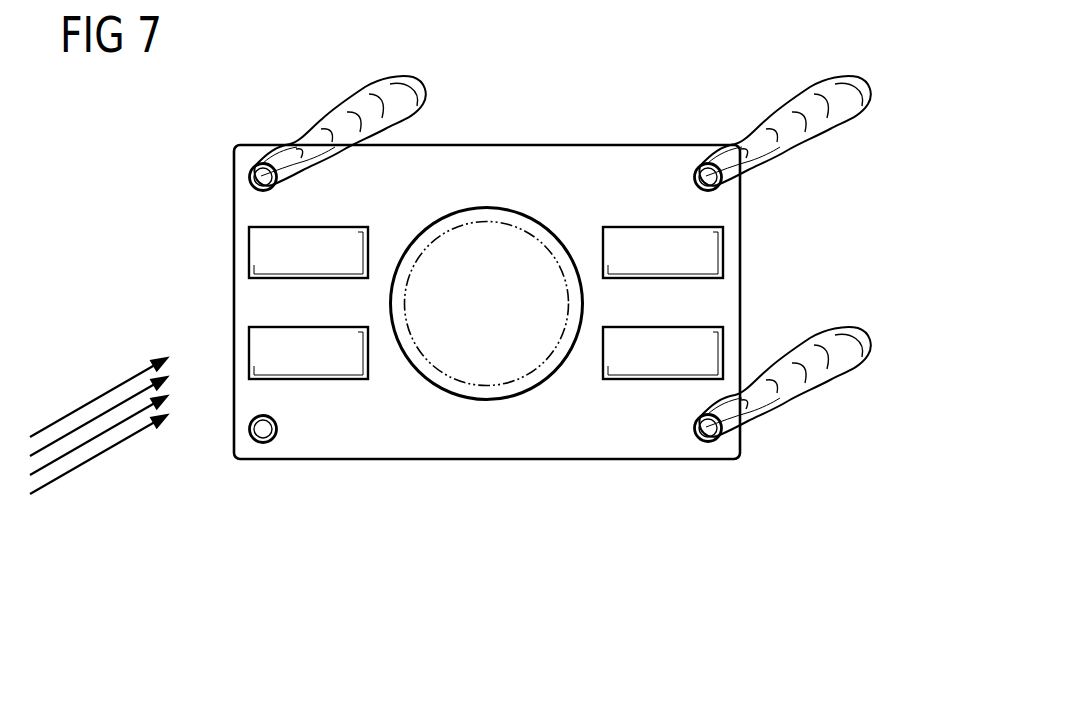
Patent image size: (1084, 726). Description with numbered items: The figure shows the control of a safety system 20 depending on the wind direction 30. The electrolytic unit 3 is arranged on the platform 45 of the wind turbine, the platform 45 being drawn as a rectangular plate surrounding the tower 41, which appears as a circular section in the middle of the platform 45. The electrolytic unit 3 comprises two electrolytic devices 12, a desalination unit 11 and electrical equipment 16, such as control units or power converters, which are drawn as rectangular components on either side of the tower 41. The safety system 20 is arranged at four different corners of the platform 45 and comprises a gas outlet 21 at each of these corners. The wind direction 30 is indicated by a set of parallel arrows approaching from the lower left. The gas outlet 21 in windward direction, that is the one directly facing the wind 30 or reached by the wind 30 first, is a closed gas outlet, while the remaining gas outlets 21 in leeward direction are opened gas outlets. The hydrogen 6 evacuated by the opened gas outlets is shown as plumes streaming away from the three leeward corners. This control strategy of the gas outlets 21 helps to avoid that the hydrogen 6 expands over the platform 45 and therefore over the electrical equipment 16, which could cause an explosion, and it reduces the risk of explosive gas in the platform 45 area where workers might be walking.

The electrolytic unit 3 is at (730, 87).
The hydrogen 6 is at (422, 87).
The desalination unit 11 is at (260, 346).
The electrolytic device 12 is at (260, 247).
The electrical equipment 16 is at (713, 347).
The safety system 20 is at (517, 132).
The gas outlet 21 is at (254, 168).
The wind direction 30 is at (74, 412).
The tower 41 is at (451, 395).
The platform 45 is at (528, 440).